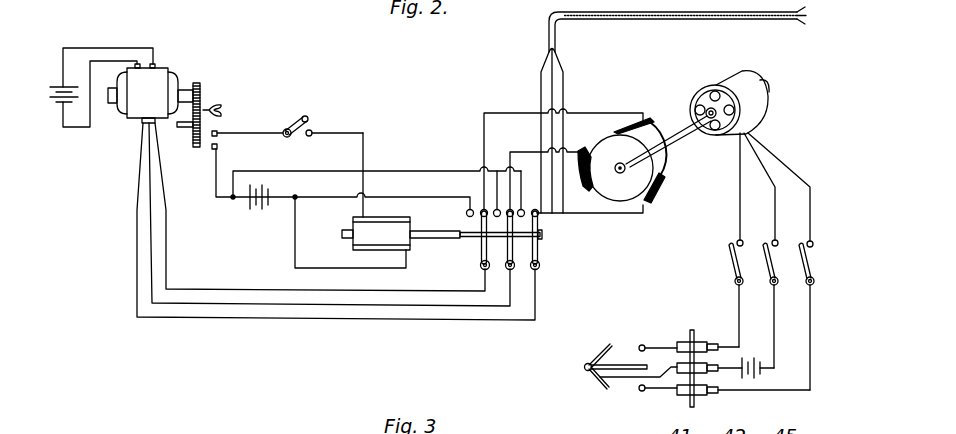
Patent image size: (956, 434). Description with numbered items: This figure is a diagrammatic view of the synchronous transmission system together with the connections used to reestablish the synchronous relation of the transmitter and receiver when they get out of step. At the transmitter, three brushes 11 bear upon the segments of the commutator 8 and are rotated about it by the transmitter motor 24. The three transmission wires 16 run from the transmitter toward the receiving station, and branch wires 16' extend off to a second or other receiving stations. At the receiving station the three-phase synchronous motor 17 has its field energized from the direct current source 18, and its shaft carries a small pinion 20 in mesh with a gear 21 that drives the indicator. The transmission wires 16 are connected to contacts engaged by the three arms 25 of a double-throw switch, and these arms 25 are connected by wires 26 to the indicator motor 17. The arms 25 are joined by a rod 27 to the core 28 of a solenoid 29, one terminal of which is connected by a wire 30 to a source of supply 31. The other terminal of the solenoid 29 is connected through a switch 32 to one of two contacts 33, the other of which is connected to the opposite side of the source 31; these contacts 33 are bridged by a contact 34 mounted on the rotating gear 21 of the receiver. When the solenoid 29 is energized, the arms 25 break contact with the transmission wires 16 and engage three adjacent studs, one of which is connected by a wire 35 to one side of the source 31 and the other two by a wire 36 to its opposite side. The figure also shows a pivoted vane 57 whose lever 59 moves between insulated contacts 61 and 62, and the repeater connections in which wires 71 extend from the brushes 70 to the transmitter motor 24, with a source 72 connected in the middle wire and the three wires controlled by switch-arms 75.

The commutator 8 is at (660, 160).
The brushes 11 is at (618, 126).
The line wires 16 is at (563, 161).
The branch wires 16' is at (653, 110).
The three-phase synchronous motor 17 is at (150, 93).
The direct current source 18 is at (62, 108).
The pinion 20 is at (197, 83).
The gear 21 is at (194, 141).
The transmitter motor 24 is at (728, 78).
The arms of double-throw switch 25 is at (490, 253).
The wires 26 is at (253, 290).
The rod 27 is at (471, 240).
The core 28 is at (431, 240).
The solenoid 29 is at (376, 191).
The wire 30 is at (295, 248).
The source of supply of electric energy 31 is at (250, 207).
The switch 32 is at (299, 124).
The contacts 33 is at (217, 134).
The contact 34 is at (220, 104).
The wire 35 is at (413, 195).
The wire 36 is at (440, 170).
The pivoted vane 57 is at (597, 352).
The lever 59 is at (620, 362).
The insulated contact 61 is at (647, 343).
The insulated contact 62 is at (640, 393).
The brushes 70 is at (714, 386).
The wires 71 is at (806, 218).
The source of supply of electric energy 72 is at (755, 375).
The switch-arms 75 is at (730, 260).